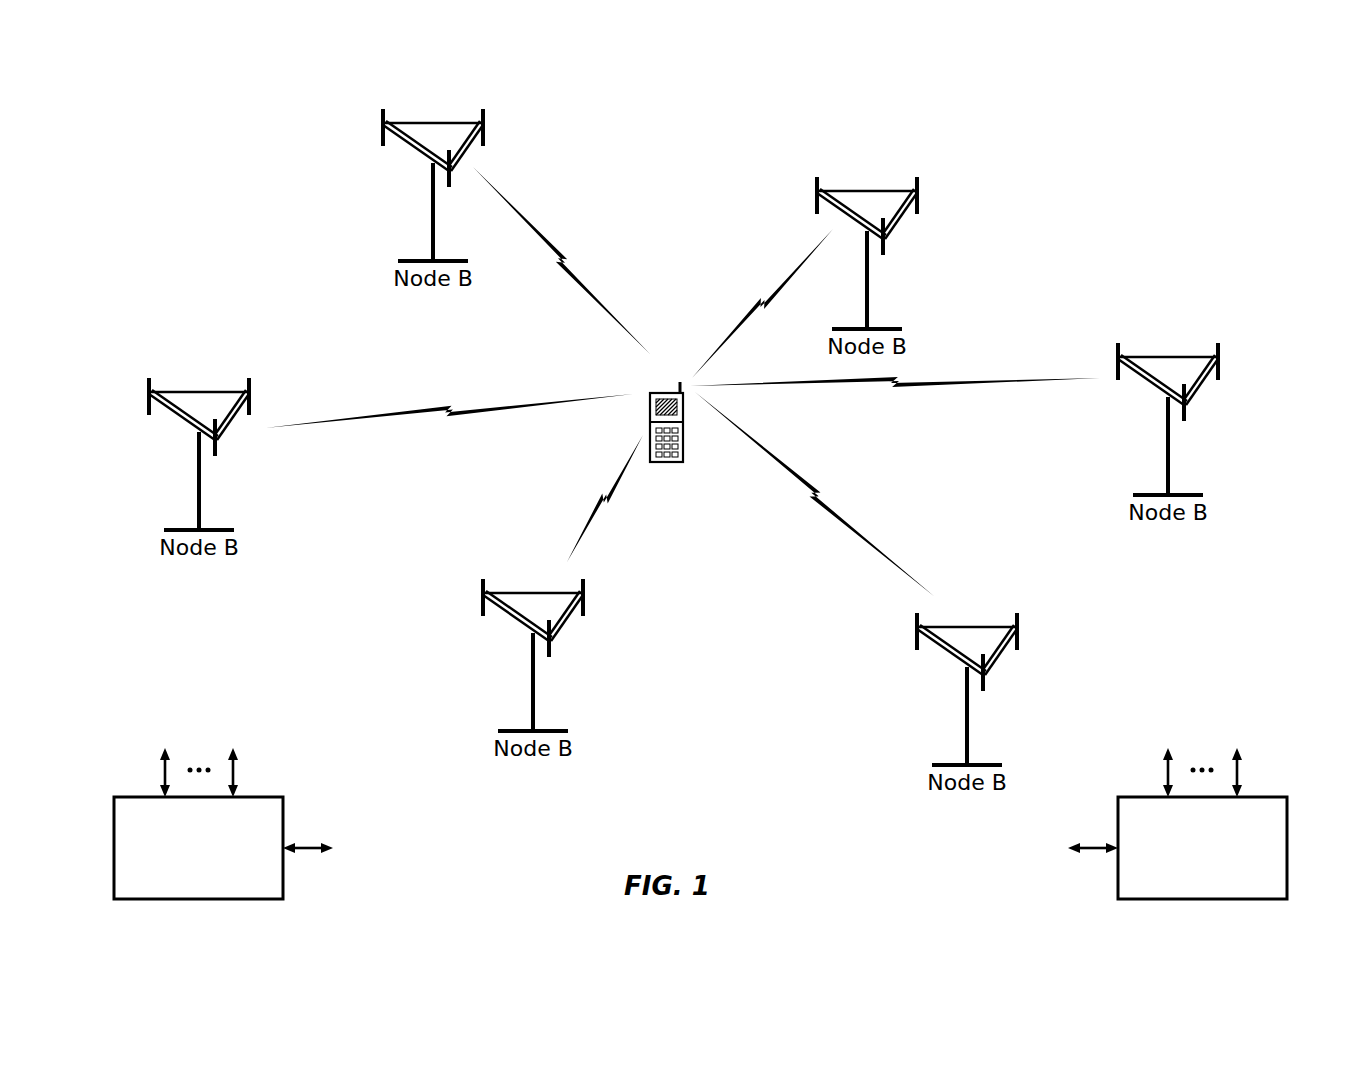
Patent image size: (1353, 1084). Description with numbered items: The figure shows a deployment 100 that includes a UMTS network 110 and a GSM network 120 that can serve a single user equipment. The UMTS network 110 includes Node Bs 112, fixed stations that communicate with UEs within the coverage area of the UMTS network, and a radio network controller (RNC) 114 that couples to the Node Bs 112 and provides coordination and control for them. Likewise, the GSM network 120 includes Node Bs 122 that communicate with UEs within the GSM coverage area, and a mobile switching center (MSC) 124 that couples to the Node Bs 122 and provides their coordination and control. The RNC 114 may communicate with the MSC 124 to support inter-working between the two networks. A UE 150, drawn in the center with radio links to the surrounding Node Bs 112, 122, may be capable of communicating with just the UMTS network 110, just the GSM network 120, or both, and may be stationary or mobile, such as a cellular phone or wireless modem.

The deployment 100 is at (704, 483).
The UMTS network 110 is at (232, 210).
The Node Bs 112 is at (428, 121).
The radio network controller (RNC) 114 is at (261, 796).
The GSM network 120 is at (1101, 210).
The Node Bs 122 is at (862, 189).
The mobile switching center (MSC) 124 is at (1263, 796).
The UE 150 is at (664, 393).